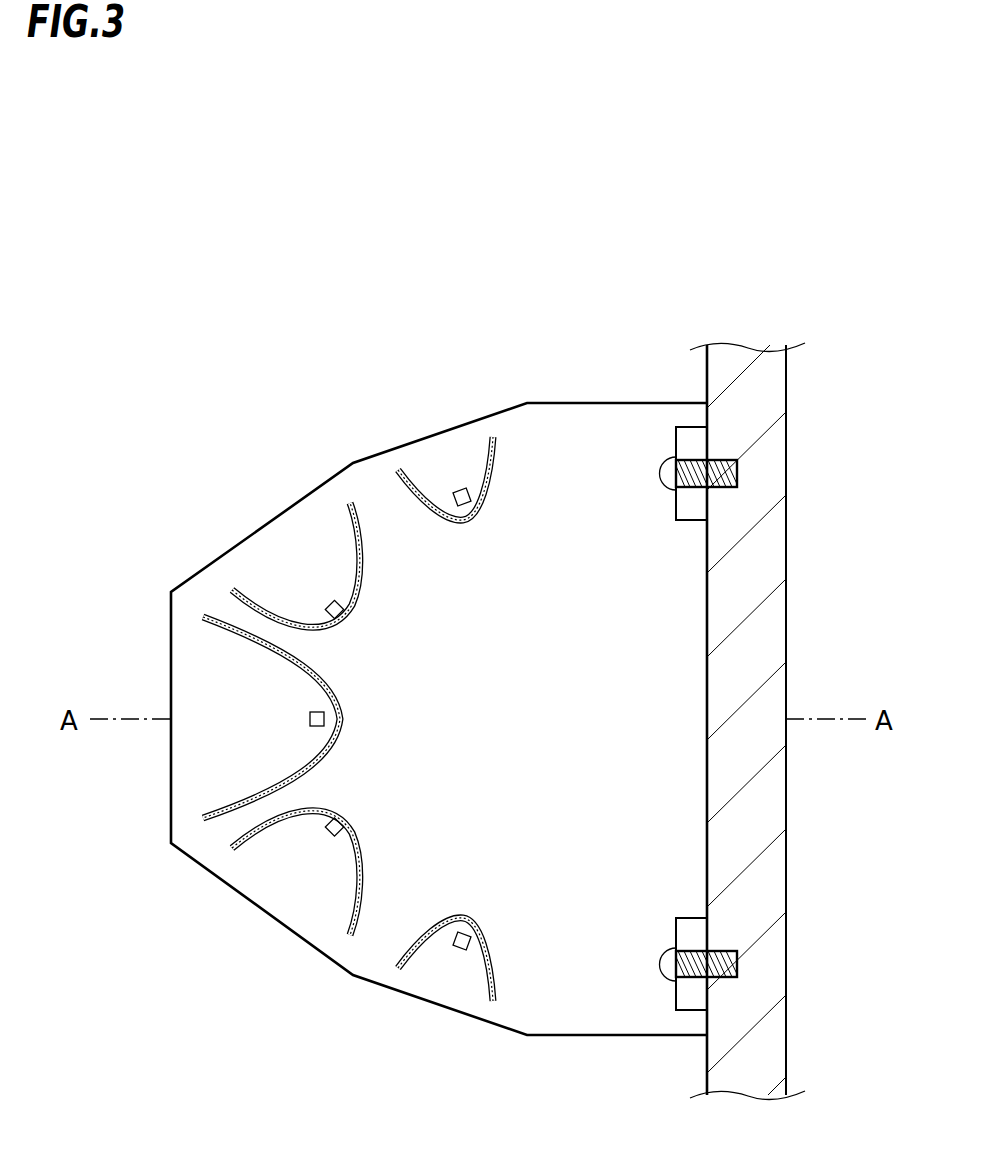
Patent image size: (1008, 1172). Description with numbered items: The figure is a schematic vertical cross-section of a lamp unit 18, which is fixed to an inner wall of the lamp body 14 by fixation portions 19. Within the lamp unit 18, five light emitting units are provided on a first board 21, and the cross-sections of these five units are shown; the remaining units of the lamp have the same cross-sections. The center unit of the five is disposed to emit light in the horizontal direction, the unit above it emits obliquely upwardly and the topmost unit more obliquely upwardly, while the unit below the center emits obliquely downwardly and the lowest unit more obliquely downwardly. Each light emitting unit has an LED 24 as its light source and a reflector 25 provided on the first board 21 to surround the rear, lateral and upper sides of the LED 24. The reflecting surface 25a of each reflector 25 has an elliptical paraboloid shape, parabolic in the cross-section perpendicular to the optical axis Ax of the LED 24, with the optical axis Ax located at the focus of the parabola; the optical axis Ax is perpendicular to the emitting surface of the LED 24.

The lamp unit 18 is at (170, 427).
The first board 21 is at (606, 402).
The lamp body 14 is at (788, 530).
The fixation portions 19 is at (686, 521).
The LED 24 is at (457, 491).
The reflector 25 is at (498, 445).
The reflecting surface 25a is at (271, 717).
The optical axis Ax is at (470, 525).